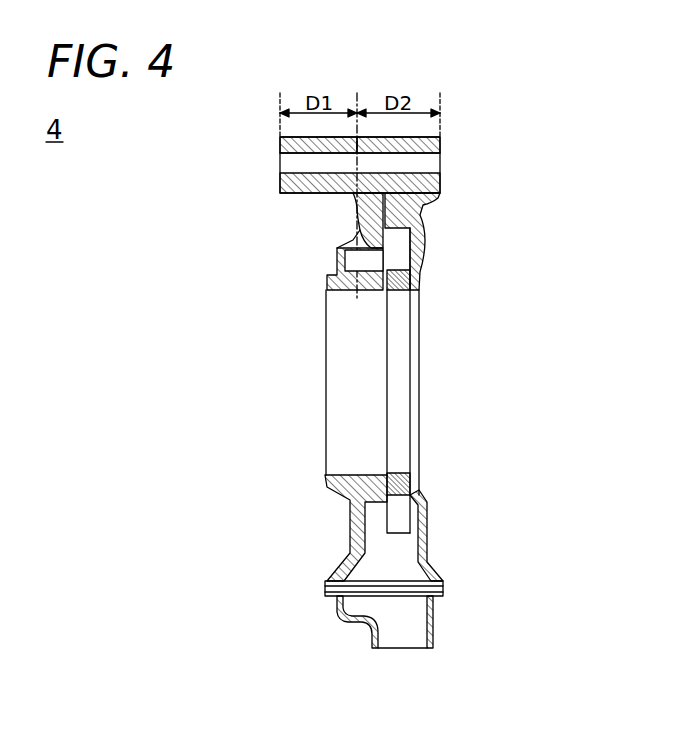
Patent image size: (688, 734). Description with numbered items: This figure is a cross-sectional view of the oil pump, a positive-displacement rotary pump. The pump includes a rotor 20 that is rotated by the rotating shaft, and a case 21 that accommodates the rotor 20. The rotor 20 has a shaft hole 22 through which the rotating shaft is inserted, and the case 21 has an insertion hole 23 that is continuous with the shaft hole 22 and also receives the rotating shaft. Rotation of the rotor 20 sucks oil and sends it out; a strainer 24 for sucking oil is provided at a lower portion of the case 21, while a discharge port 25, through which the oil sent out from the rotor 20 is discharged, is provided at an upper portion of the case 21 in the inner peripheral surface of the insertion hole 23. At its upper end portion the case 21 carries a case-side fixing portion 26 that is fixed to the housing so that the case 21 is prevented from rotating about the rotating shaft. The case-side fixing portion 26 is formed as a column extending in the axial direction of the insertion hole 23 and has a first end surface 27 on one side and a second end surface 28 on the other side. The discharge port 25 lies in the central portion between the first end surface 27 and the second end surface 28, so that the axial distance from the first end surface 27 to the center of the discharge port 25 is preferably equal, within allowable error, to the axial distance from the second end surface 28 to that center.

The rotor 20 is at (407, 518).
The case 21 is at (337, 613).
The shaft hole 22 is at (396, 473).
The insertion hole 23 is at (328, 476).
The strainer 24 is at (410, 598).
The discharge port 25 is at (345, 291).
The case-side fixing portion 26 is at (283, 194).
The first end surface 27 is at (280, 141).
The second end surface 28 is at (440, 140).